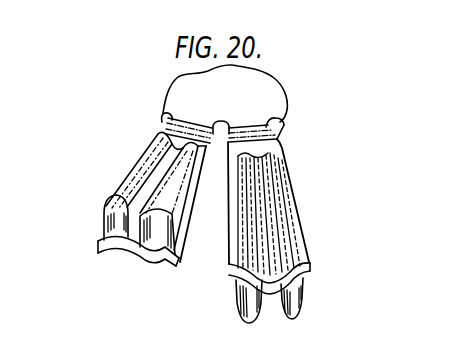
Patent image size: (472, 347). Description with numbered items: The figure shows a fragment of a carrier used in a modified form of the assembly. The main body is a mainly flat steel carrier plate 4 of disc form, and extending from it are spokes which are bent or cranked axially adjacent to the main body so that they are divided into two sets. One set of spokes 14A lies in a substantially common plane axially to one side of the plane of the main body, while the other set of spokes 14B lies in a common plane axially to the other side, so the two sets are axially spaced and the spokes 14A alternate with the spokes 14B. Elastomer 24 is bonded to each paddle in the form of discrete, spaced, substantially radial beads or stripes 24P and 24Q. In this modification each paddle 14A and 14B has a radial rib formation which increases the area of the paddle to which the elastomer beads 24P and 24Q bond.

The carrier plate 4 is at (275, 100).
The elastomer 24 is at (128, 165).
The spokes 14A is at (291, 193).
The spokes 14B is at (98, 242).
The elastomer bead 24P is at (128, 255).
The elastomer bead 24Q is at (155, 262).